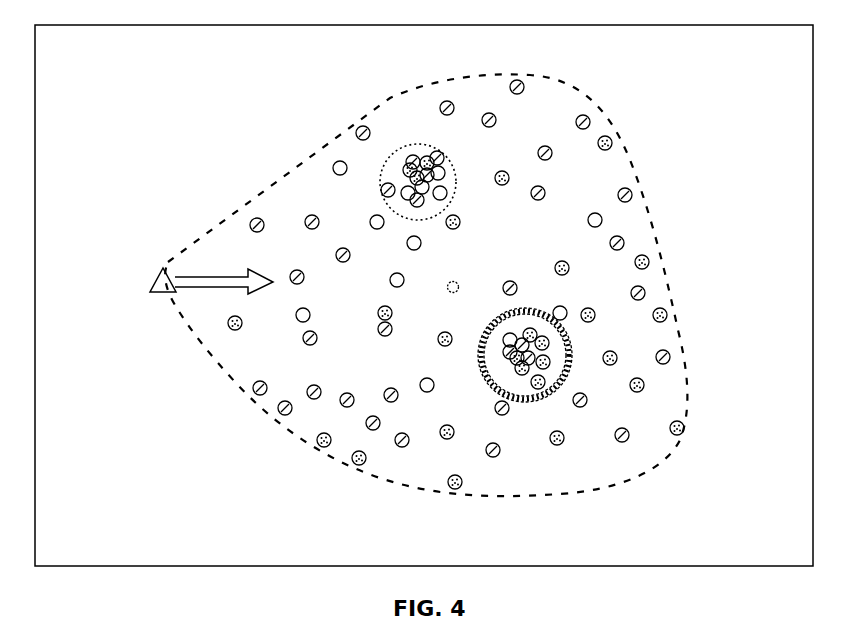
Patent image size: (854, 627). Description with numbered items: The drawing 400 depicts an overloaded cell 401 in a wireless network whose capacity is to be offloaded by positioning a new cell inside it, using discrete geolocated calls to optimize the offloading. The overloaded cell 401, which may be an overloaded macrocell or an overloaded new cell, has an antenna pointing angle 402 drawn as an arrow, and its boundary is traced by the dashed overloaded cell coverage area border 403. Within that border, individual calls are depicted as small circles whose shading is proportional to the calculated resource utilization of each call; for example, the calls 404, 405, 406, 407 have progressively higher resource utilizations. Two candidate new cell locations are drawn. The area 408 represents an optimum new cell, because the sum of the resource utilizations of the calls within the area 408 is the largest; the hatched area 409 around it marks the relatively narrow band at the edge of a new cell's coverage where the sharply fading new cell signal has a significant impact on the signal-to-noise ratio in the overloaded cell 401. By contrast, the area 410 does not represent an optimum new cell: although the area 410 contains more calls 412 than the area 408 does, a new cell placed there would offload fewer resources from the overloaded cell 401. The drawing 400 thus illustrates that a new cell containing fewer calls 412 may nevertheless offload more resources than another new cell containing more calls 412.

The particle composition 400 is at (116, 86).
The overloaded cell 401 is at (158, 291).
The antenna pointing angle 402 is at (198, 277).
The overloaded cell coverage area border 403 is at (272, 184).
The call 404 is at (257, 397).
The call 405 is at (284, 416).
The call 406 is at (322, 450).
The call 407 is at (359, 467).
The optimum new cell area 408 is at (568, 350).
The hatched area 409 is at (566, 375).
The non-optimum new cell area 410 is at (395, 172).
The calls 412 is at (419, 166).